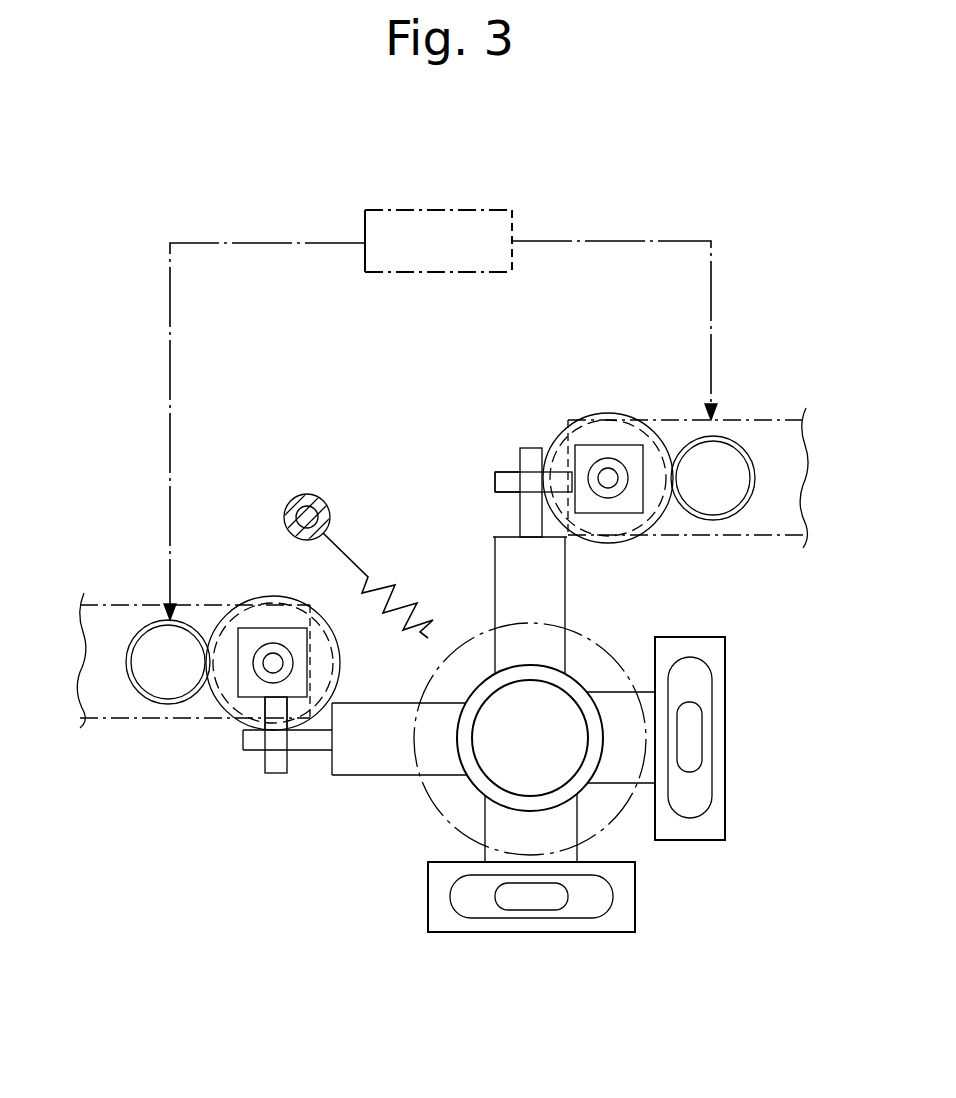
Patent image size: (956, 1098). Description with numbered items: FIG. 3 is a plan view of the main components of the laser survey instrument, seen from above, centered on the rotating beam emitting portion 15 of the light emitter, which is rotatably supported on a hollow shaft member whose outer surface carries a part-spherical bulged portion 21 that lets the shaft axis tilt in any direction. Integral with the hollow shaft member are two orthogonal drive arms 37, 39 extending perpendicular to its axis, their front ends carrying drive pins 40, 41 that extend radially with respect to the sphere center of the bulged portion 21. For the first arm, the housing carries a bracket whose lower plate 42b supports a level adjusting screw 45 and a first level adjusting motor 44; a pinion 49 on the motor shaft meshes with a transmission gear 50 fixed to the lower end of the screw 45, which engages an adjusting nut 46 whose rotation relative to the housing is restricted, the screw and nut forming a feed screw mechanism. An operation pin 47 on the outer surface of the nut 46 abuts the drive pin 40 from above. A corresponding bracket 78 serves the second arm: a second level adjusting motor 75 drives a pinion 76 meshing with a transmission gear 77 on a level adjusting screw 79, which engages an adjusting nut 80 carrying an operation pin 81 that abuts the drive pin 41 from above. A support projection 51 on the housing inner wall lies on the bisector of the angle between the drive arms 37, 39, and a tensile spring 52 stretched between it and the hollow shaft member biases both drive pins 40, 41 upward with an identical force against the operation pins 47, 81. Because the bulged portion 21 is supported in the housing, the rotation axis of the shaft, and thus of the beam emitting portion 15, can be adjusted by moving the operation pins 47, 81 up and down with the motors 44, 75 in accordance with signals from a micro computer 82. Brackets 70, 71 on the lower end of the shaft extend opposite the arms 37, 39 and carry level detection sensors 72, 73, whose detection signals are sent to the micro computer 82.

The rotating beam emitting portion 15 is at (478, 790).
The bulged portion 21 is at (585, 625).
The drive arm 37 is at (357, 771).
The drive arm 39 is at (536, 571).
The drive pin 40 is at (309, 752).
The drive pin 41 is at (496, 496).
The lower plate 42b is at (122, 710).
The first level adjusting motor 44 is at (130, 638).
The level adjusting screw 45 is at (265, 648).
The adjusting nut 46 is at (256, 712).
The operation pin 47 is at (276, 772).
The pinion 49 is at (150, 640).
The transmission gear 50 is at (208, 640).
The support projection 51 is at (300, 494).
The tensile spring 52 is at (346, 546).
The bracket 70 is at (615, 773).
The bracket 71 is at (492, 862).
The level detection sensor 72 is at (697, 680).
The level detection sensor 73 is at (463, 900).
The second level adjusting motor 75 is at (723, 432).
The pinion 76 is at (733, 465).
The transmission gear 77 is at (621, 414).
The bracket 78 is at (776, 535).
The level adjusting screw 79 is at (589, 474).
The adjusting nut 80 is at (634, 447).
The operation pin 81 is at (500, 471).
The micro computer 82 is at (372, 209).